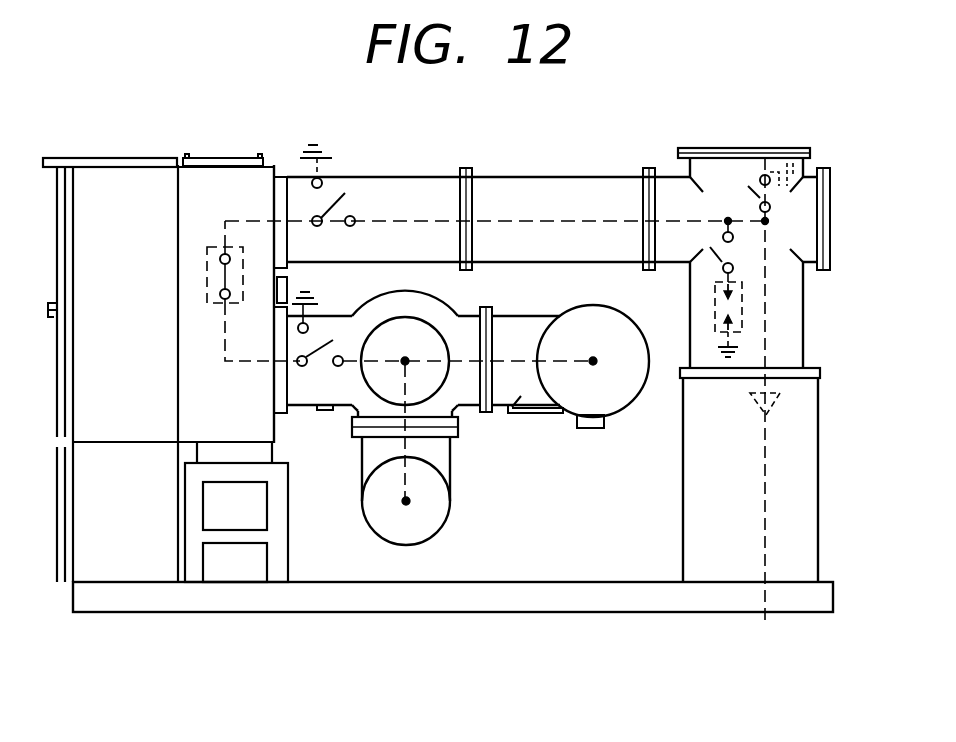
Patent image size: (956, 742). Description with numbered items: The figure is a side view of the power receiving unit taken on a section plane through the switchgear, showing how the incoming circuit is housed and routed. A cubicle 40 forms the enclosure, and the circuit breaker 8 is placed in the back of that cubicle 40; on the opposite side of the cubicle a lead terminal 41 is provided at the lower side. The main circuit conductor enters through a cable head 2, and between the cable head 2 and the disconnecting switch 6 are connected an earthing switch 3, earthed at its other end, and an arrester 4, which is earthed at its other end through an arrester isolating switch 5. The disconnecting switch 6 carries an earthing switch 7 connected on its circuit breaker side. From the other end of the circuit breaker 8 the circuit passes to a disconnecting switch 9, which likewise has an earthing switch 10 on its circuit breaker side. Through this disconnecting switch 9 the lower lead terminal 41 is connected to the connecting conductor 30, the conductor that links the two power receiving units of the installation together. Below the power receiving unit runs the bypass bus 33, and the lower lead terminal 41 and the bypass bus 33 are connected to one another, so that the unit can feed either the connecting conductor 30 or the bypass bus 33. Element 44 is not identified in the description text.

The cable head 2 is at (778, 400).
The earthing switch 3 is at (748, 186).
The arrester 4 is at (715, 307).
The arrester isolating switch 5 is at (720, 262).
The disconnecting switch 6 is at (333, 229).
The earthing switch 7 is at (306, 146).
The circuit breaker 8 is at (207, 270).
The disconnecting switch 9 is at (320, 350).
The earthing switch 10 is at (310, 298).
The connecting conductor 30 is at (593, 361).
The bypass bus 33 is at (406, 501).
The cubicle 40 is at (126, 158).
The lead terminal 41 is at (312, 406).
The upper duct 44 is at (362, 177).